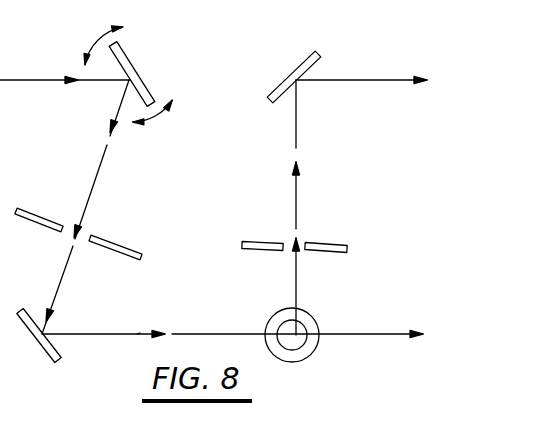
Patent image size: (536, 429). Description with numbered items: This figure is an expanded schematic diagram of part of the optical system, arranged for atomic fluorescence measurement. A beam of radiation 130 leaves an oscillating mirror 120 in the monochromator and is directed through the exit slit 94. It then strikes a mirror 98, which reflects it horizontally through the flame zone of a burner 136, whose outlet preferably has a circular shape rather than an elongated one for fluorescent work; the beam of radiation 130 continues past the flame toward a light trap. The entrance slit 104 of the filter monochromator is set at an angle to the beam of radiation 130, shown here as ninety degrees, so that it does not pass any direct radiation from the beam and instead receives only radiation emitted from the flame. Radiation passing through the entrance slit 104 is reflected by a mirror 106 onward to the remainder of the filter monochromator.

The oscillating mirror 120 is at (120, 67).
The exit slit 94 is at (113, 243).
The mirror 98 is at (58, 362).
The beam of radiation 130 is at (137, 334).
The burner 136 is at (313, 318).
The entrance slit 104 is at (320, 244).
The mirror 106 is at (283, 97).